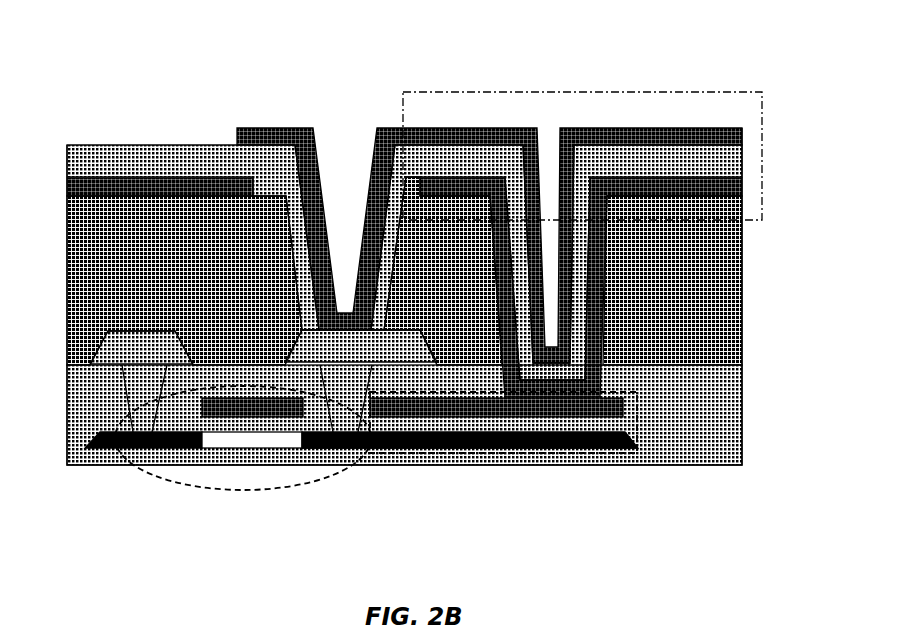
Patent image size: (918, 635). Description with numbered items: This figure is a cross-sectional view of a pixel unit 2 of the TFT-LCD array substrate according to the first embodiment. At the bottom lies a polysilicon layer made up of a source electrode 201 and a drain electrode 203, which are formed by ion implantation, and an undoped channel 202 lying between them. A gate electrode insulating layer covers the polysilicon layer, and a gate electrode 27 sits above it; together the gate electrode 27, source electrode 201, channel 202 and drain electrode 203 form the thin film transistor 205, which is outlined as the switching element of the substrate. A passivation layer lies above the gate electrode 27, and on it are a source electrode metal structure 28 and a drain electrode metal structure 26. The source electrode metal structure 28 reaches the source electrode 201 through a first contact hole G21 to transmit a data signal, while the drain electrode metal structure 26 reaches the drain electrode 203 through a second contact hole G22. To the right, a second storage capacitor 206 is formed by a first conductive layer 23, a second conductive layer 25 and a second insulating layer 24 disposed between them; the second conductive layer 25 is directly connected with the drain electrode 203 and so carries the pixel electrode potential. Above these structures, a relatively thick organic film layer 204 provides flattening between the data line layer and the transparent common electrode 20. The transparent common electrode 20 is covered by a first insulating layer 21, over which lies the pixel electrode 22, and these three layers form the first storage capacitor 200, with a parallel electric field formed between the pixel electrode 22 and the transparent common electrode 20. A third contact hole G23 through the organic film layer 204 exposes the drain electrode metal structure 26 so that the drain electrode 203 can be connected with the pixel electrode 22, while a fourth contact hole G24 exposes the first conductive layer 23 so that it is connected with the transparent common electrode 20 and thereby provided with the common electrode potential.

The pixel unit 2 is at (381, 273).
The first storage capacitor 200 is at (616, 90).
The pixel electrode 22 is at (742, 130).
The first insulating layer 21 is at (732, 162).
The transparent common electrode 20 is at (732, 187).
The organic film layer 204 is at (722, 278).
The first conductive layer 23 is at (623, 402).
The second conductive layer 25 is at (615, 440).
The second insulating layer 24 is at (500, 425).
The second storage capacitor 206 is at (412, 474).
The drain electrode metal structure 26 is at (333, 432).
The second contact hole G22 is at (351, 376).
The drain electrode 203 is at (325, 440).
The gate electrode 27 is at (245, 420).
The channel 202 is at (222, 442).
The source electrode metal structure 28 is at (130, 450).
The source electrode 201 is at (98, 448).
The thin film transistor 205 is at (110, 414).
The first contact hole G21 is at (128, 384).
The third contact hole G23 is at (340, 204).
The fourth contact hole G24 is at (545, 158).